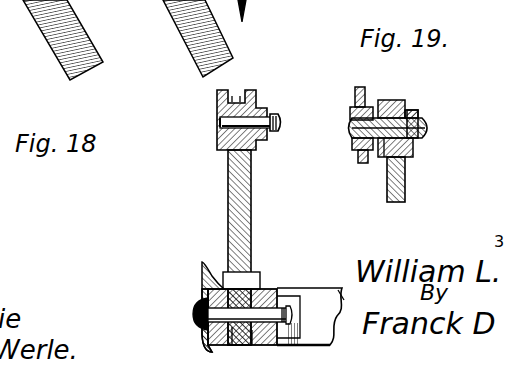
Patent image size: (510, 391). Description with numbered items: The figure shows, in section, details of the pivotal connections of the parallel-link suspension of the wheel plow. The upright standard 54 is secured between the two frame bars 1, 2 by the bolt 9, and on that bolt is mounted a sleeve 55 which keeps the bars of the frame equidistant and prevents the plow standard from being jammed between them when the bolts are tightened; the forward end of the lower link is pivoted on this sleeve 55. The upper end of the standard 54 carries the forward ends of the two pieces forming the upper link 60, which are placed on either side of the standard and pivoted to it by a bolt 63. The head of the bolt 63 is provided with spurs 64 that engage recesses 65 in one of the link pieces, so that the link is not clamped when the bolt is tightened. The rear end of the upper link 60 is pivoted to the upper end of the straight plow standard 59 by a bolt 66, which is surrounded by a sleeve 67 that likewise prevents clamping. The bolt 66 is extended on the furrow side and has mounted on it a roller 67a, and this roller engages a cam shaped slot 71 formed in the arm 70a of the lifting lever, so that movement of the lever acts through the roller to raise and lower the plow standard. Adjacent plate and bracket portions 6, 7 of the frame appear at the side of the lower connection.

In FIG. 18, the bar 1 is at (256, 348).
In FIG. 18, the bar 2 is at (206, 343).
In FIG. 18, the plate 6 is at (309, 308).
In FIG. 18, the bracket 7 is at (318, 307).
In FIG. 18, the bolt 9 is at (293, 318).
In FIG. 18, the standard 54 is at (252, 190).
In FIG. 18, the sleeve 55 is at (250, 278).
In FIG. 19, the plow standard 59 is at (409, 174).
In FIG. 18, the upper link 60 is at (237, 360).
In FIG. 19, the upper link 60 is at (422, 101).
In FIG. 18, the bolt 63 is at (282, 126).
In FIG. 18, the spurs 64 is at (223, 123).
In FIG. 18, the recesses 65 is at (216, 103).
In FIG. 19, the bolt 66 is at (433, 128).
In FIG. 19, the sleeve 67 is at (390, 165).
In FIG. 19, the roller 67a is at (353, 144).
In FIG. 19, the arm 70a is at (354, 96).
In FIG. 19, the cam shaped slot 71 is at (366, 105).